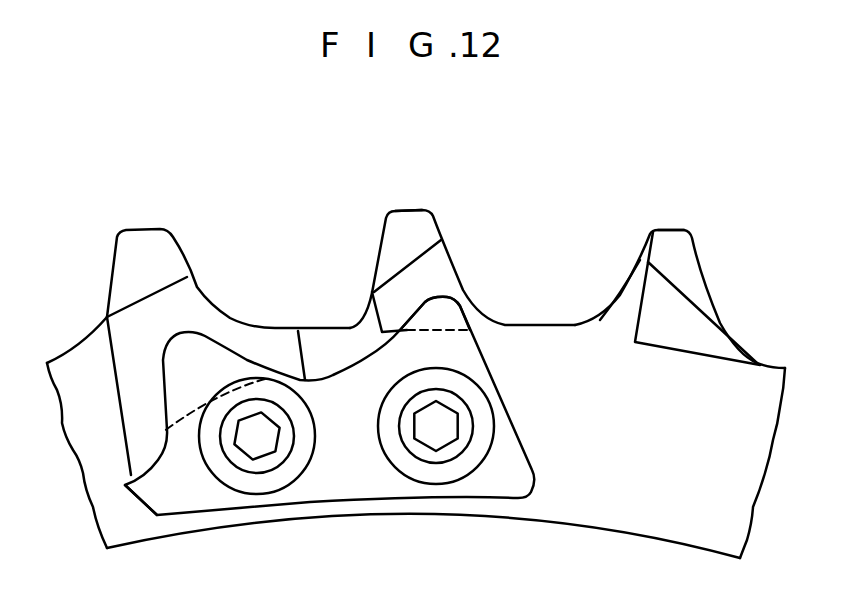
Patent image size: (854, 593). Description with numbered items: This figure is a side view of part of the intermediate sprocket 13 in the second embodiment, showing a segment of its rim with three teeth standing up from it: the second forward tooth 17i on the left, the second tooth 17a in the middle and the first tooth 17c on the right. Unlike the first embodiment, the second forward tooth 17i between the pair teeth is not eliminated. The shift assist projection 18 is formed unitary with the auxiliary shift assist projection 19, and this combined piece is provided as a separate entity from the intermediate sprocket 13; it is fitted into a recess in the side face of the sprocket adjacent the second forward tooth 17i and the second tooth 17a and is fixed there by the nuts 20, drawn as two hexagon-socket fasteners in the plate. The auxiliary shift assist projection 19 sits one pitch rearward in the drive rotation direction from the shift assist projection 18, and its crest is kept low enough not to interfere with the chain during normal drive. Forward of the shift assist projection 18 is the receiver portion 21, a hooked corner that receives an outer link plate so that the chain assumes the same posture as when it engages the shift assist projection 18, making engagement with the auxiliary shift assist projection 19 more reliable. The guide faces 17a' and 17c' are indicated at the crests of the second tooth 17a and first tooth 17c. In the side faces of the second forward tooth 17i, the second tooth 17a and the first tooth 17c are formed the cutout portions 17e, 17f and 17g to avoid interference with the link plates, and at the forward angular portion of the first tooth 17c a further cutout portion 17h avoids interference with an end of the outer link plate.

The intermediate sprocket 13 is at (88, 316).
The second forward tooth 17i is at (182, 253).
The cutout portion 17e is at (199, 309).
The shift assist projection 18 is at (210, 347).
The auxiliary shift assist projection 19 is at (450, 317).
The receiver portion 21 is at (127, 470).
The nut 20 is at (283, 448).
The second tooth 17a is at (462, 267).
The guide face 17a' is at (406, 182).
The cutout portion 17f is at (444, 276).
The first tooth 17c is at (680, 284).
The guide face 17c' is at (677, 198).
The cutout portion 17h is at (633, 260).
The cutout portion 17g is at (679, 319).